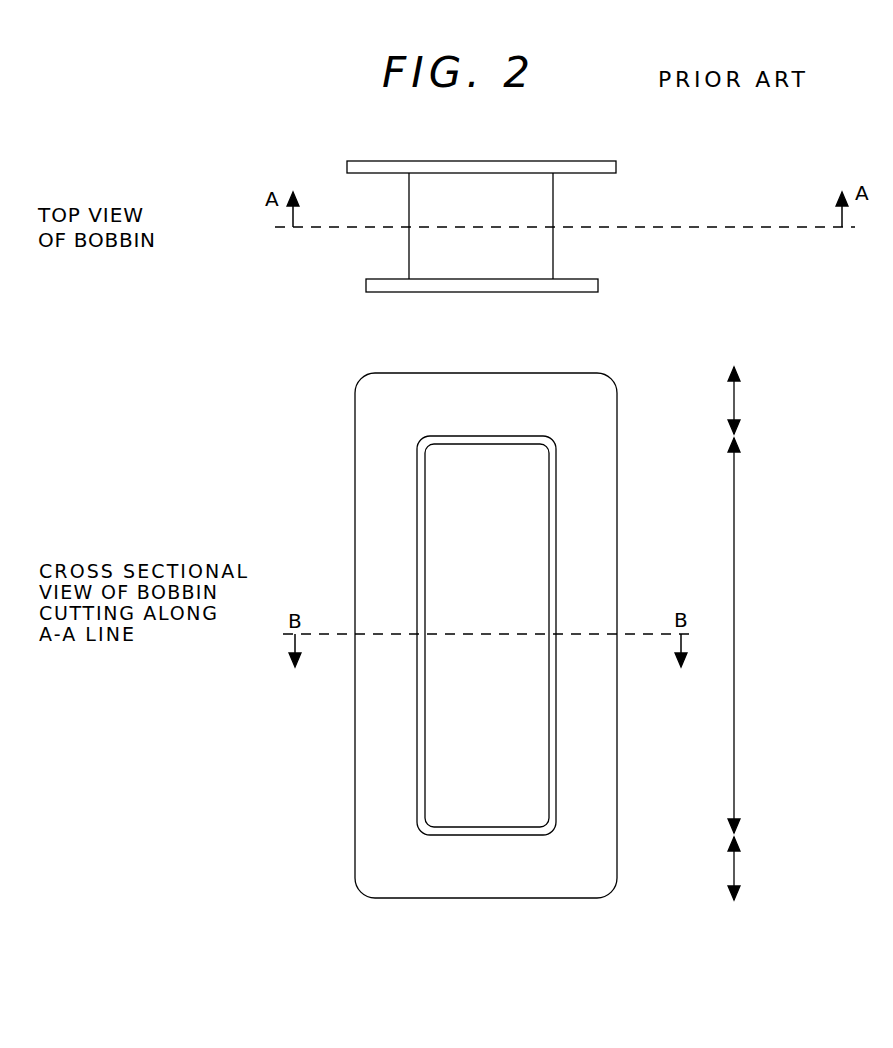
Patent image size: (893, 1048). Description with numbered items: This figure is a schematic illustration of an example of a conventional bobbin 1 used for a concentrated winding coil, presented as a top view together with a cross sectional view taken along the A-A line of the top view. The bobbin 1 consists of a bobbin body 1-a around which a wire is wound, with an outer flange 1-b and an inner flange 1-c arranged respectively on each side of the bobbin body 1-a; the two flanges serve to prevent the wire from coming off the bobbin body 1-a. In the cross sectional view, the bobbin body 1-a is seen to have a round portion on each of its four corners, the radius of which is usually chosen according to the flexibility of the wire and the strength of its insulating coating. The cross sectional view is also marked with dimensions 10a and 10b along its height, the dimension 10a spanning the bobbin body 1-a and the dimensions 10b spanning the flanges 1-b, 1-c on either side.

The bobbin 1 is at (549, 518).
The bobbin body 1-a is at (535, 250).
The outer flange 1-b is at (616, 166).
The inner flange 1-c is at (521, 278).
The length of winding core 10a is at (754, 635).
The flange thickness 10b is at (754, 633).